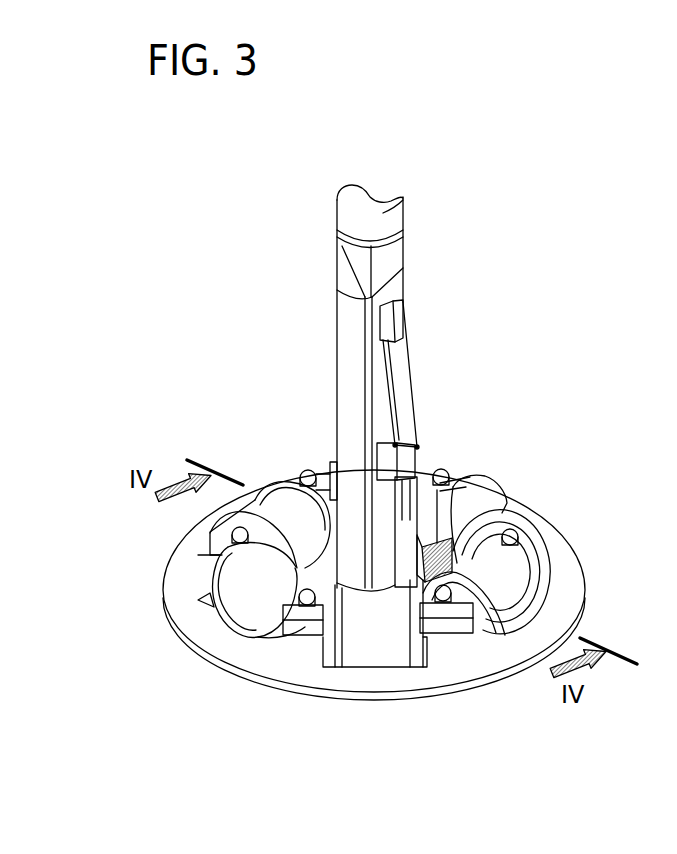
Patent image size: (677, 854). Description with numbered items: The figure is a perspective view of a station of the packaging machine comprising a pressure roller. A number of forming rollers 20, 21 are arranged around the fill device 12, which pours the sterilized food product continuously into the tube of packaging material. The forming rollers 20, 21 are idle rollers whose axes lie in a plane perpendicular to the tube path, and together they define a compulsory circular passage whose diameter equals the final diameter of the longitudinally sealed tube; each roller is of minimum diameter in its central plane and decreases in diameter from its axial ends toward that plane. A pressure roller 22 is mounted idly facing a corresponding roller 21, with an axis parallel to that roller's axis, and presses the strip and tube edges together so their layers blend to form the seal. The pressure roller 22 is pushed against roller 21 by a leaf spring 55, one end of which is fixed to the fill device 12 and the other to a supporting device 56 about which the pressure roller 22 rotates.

The fill device 12 is at (398, 196).
The leaf spring 55 is at (402, 398).
The supporting device 56 is at (410, 563).
The pressure roller 22 is at (437, 512).
The forming roller 20 is at (282, 498).
The forming roller 21 is at (507, 583).